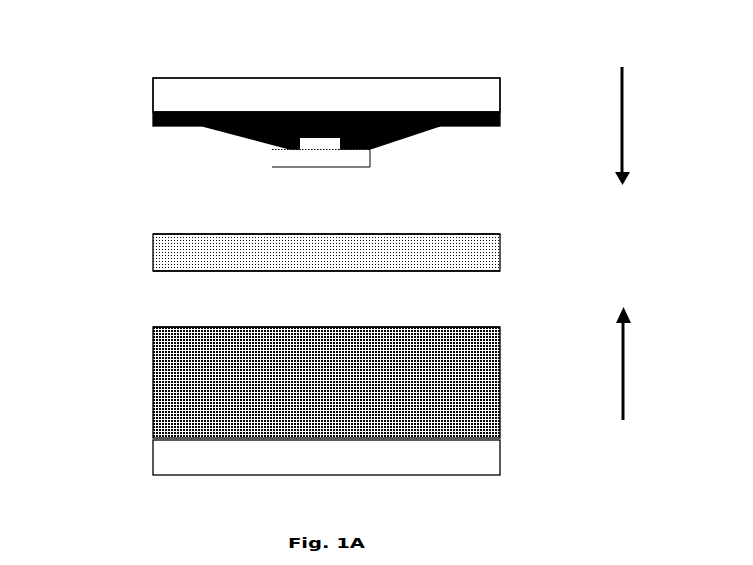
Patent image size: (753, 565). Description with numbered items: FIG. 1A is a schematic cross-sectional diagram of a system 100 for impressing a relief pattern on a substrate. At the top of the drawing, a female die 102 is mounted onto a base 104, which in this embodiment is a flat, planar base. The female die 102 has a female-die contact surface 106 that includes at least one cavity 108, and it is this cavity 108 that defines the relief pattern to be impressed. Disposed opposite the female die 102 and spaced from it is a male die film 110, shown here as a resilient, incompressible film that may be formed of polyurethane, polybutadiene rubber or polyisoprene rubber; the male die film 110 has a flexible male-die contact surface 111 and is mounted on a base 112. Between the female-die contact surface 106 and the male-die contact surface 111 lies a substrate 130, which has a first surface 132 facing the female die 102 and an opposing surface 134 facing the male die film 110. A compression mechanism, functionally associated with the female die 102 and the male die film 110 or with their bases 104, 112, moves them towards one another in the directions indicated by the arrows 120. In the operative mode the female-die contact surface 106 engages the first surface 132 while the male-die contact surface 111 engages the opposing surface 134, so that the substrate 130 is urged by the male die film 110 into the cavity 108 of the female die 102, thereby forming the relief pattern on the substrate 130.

The system 100 is at (224, 62).
The female die 102 is at (153, 118).
The base 104 is at (170, 99).
The female-die contact surface 106 is at (416, 146).
The cavity 108 is at (320, 143).
The male die film 110 is at (177, 383).
The male-die contact surface 111 is at (467, 327).
The base 112 is at (177, 463).
The arrows 120 is at (642, 243).
The substrate 130 is at (441, 221).
The first surface 132 is at (182, 235).
The opposing surface 134 is at (187, 272).